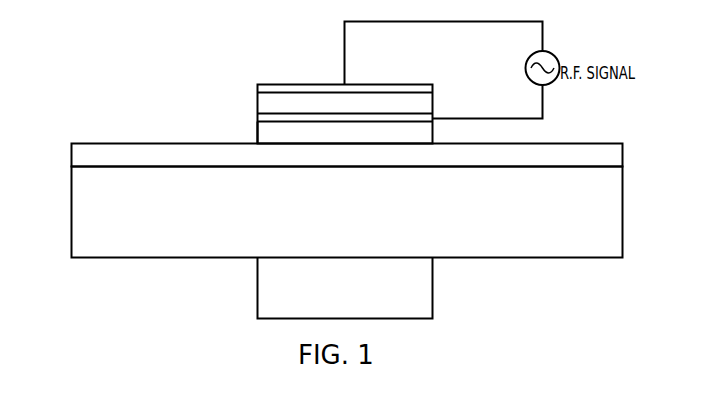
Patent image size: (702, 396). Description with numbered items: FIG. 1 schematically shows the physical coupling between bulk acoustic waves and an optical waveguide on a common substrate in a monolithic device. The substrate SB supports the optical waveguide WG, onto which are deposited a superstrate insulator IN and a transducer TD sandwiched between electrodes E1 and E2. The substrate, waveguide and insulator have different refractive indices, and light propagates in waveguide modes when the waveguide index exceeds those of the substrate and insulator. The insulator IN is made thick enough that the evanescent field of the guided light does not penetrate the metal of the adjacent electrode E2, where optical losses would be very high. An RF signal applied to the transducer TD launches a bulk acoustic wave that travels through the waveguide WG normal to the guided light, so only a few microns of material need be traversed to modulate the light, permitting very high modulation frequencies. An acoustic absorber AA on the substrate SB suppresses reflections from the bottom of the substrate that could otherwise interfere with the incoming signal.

The substrate SB is at (82, 215).
The optical waveguide WG is at (75, 155).
The acoustic absorber AA is at (420, 283).
The transducer TD is at (422, 103).
The electrode E1 is at (258, 89).
The electrode E2 is at (258, 118).
The superstrate insulator IN is at (267, 132).